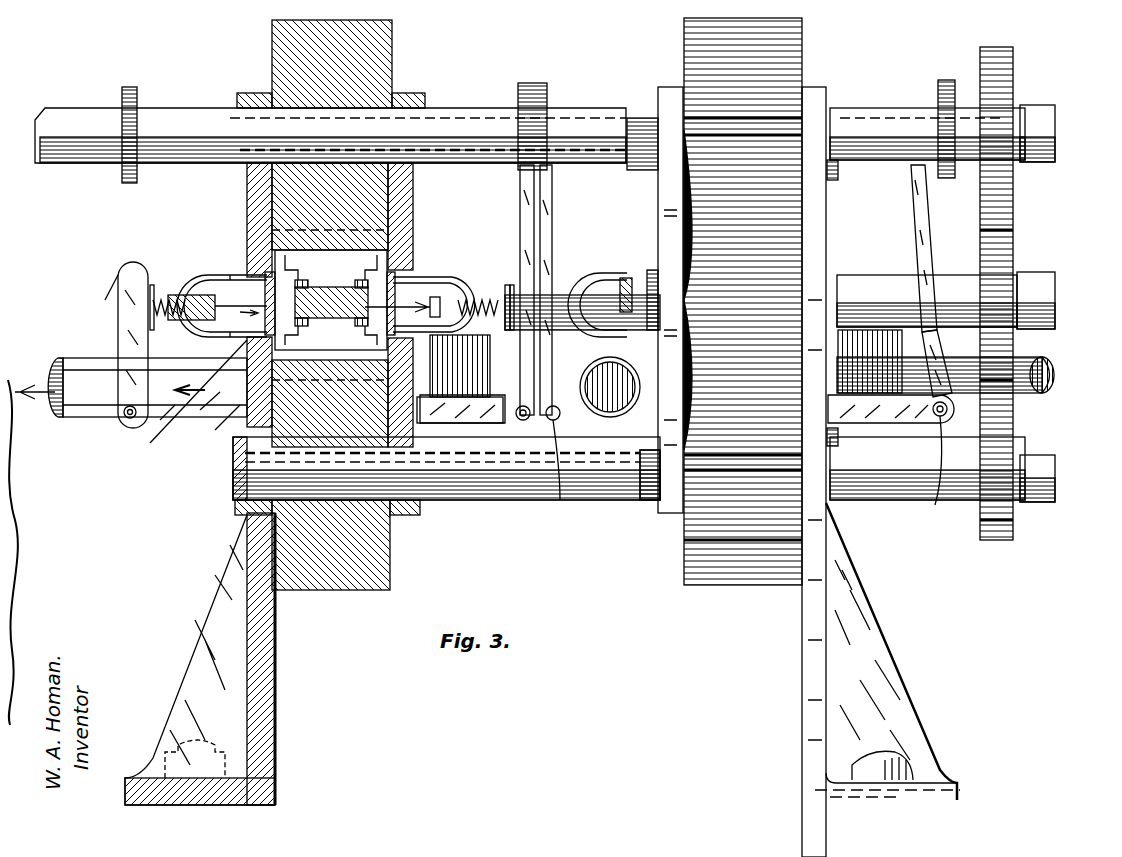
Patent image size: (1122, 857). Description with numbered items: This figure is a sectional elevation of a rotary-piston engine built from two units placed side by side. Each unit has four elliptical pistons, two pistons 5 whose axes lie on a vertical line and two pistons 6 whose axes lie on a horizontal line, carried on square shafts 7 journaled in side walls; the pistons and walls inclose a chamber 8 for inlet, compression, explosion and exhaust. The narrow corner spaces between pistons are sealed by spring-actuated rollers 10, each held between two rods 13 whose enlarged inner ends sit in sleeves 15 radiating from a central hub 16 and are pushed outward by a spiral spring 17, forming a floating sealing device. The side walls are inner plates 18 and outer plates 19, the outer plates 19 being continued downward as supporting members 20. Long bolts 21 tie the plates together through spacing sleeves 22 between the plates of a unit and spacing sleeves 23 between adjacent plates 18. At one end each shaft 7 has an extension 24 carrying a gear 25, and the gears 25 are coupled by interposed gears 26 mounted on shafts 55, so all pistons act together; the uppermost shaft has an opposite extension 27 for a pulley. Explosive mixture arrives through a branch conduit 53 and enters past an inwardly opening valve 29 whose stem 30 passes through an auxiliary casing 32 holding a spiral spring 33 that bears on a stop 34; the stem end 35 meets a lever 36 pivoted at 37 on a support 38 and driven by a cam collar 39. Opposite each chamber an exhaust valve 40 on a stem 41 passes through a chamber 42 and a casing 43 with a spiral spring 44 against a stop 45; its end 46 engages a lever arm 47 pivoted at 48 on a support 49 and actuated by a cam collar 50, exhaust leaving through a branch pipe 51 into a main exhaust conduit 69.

The piston 5 is at (392, 56).
The piston 6 is at (742, 290).
The shaft 7 is at (618, 130).
The chamber 8 is at (233, 432).
The spring-actuated roller 10 is at (330, 305).
The rod 13 is at (331, 300).
The sleeve 15 is at (331, 296).
The hub 16 is at (345, 350).
The spiral spring 17 is at (610, 387).
The side wall 18 is at (413, 195).
The side wall 19 is at (250, 195).
The supporting member 20 is at (263, 672).
The long bolt 21 is at (838, 172).
The spacing sleeve 22 is at (665, 510).
The spacing sleeve 23 is at (620, 150).
The shaft extension 24 is at (1050, 270).
The gear 25 is at (1010, 190).
The interposed gear 26 is at (1040, 348).
The shaft extension 27 is at (45, 126).
The inwardly opening valve 29 is at (150, 443).
The stem 30 is at (235, 280).
The auxiliary casing 32 is at (195, 292).
The spiral spring 33 is at (160, 298).
The stop 34 is at (148, 312).
The stem extension 35 is at (130, 290).
The lever 36 is at (118, 305).
The pivot 37 is at (122, 417).
The support 38 is at (190, 417).
The cam collar 39 is at (122, 172).
The exhaust valve 40 is at (400, 300).
The stem 41 is at (443, 280).
The chamber 42 is at (480, 295).
The auxiliary casing 43 is at (455, 280).
The spiral spring 44 is at (512, 292).
The stop 45 is at (530, 270).
The stem extension 46 is at (540, 285).
The lever arm 47 is at (518, 200).
The pivot 48 is at (741, 476).
The support 49 is at (477, 423).
The cam collar 50 is at (560, 135).
The branch pipe 51 is at (523, 420).
The branch conduit 53 is at (625, 270).
The shaft 55 is at (465, 108).
The main exhaust conduit 69 is at (58, 415).